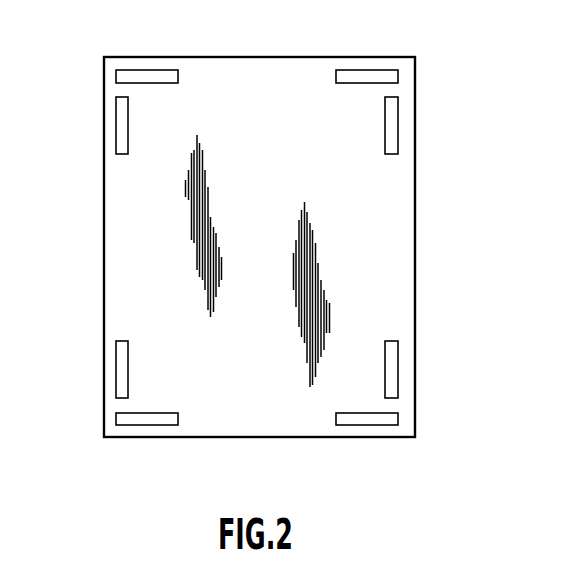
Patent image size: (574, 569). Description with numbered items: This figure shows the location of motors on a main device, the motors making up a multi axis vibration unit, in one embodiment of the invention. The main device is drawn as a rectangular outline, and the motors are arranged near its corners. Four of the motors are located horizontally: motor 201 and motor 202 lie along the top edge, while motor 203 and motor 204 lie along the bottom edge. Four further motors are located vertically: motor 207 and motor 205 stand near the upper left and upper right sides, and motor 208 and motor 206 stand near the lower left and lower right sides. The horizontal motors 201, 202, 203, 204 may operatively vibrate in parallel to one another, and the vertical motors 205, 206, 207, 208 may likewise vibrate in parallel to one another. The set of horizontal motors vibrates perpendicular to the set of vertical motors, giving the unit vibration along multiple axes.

The horizontally located motor 201 is at (148, 64).
The horizontally located motor 202 is at (370, 64).
The horizontally located motor 203 is at (143, 428).
The horizontally located motor 204 is at (362, 428).
The vertically located motor 205 is at (407, 128).
The vertically located motor 206 is at (407, 373).
The vertically located motor 207 is at (110, 125).
The vertically located motor 208 is at (110, 371).